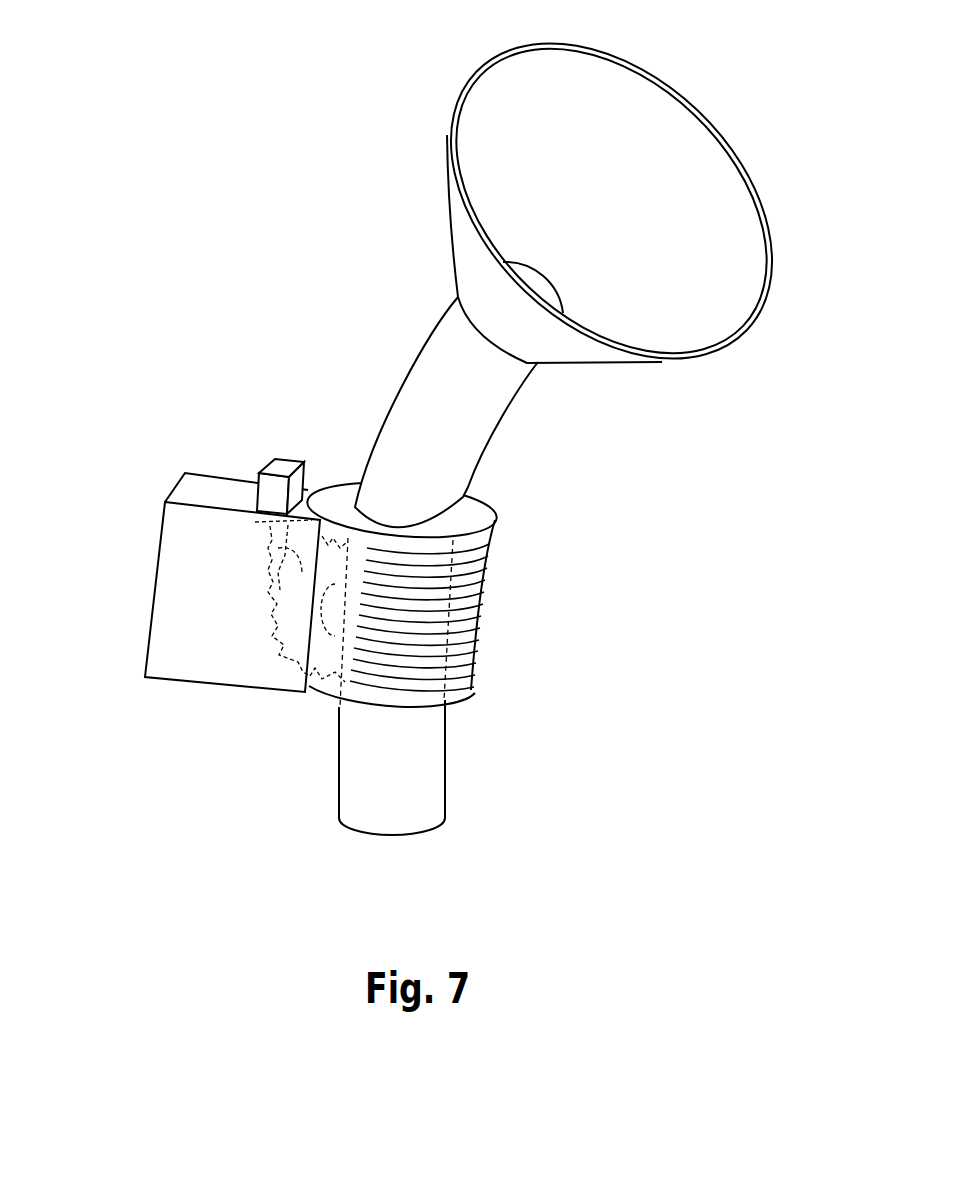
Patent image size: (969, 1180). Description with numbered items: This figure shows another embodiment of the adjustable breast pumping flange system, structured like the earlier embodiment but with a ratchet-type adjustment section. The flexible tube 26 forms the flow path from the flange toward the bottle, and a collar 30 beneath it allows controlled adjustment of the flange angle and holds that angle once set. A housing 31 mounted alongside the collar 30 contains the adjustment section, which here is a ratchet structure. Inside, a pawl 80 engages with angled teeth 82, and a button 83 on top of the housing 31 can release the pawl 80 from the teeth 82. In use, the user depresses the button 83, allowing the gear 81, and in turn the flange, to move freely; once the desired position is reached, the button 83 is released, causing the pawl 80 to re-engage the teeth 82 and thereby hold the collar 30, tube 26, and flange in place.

The flexible tube 26 is at (407, 373).
The collar 30 is at (480, 600).
The housing 31 is at (155, 557).
The pawl 80 is at (270, 557).
The gear 81 is at (300, 607).
The angled teeth 82 is at (282, 652).
The button 83 is at (283, 467).